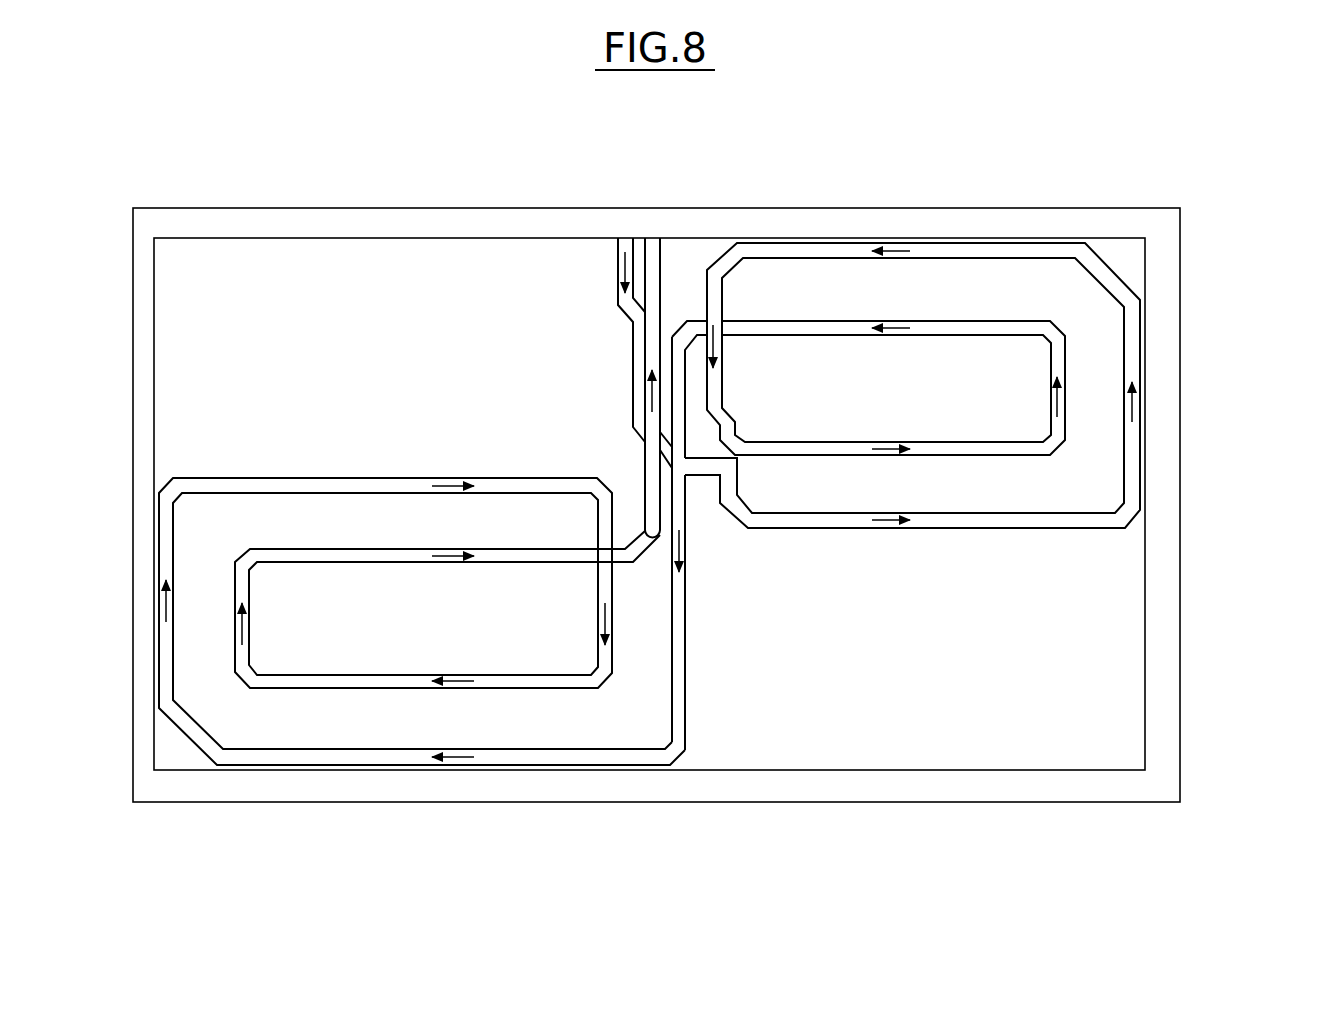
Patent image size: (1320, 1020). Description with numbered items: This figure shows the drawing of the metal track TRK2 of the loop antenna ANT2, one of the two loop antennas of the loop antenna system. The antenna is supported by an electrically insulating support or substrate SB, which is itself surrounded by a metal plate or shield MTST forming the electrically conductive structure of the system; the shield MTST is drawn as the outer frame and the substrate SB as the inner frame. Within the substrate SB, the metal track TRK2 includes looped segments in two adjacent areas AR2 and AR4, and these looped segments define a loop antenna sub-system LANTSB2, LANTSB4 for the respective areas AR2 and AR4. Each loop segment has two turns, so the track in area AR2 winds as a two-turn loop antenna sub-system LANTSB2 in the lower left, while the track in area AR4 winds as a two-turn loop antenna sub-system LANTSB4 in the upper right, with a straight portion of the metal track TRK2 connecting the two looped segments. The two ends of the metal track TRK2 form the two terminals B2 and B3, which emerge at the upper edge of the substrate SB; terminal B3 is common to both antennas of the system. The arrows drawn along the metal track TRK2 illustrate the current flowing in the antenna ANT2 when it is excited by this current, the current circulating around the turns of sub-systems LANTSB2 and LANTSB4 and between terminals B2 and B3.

The metal plate or shield MTST is at (1170, 345).
The substrate SB is at (918, 718).
The loop antenna ANT2 is at (952, 542).
The area AR4 is at (975, 280).
The loop antenna sub-system LANTSB4 is at (843, 248).
The metal track TRK2 is at (767, 250).
The area AR2 is at (500, 722).
The loop antenna sub-system LANTSB2 is at (336, 762).
The terminal B3 is at (650, 238).
The terminal B2 is at (627, 238).